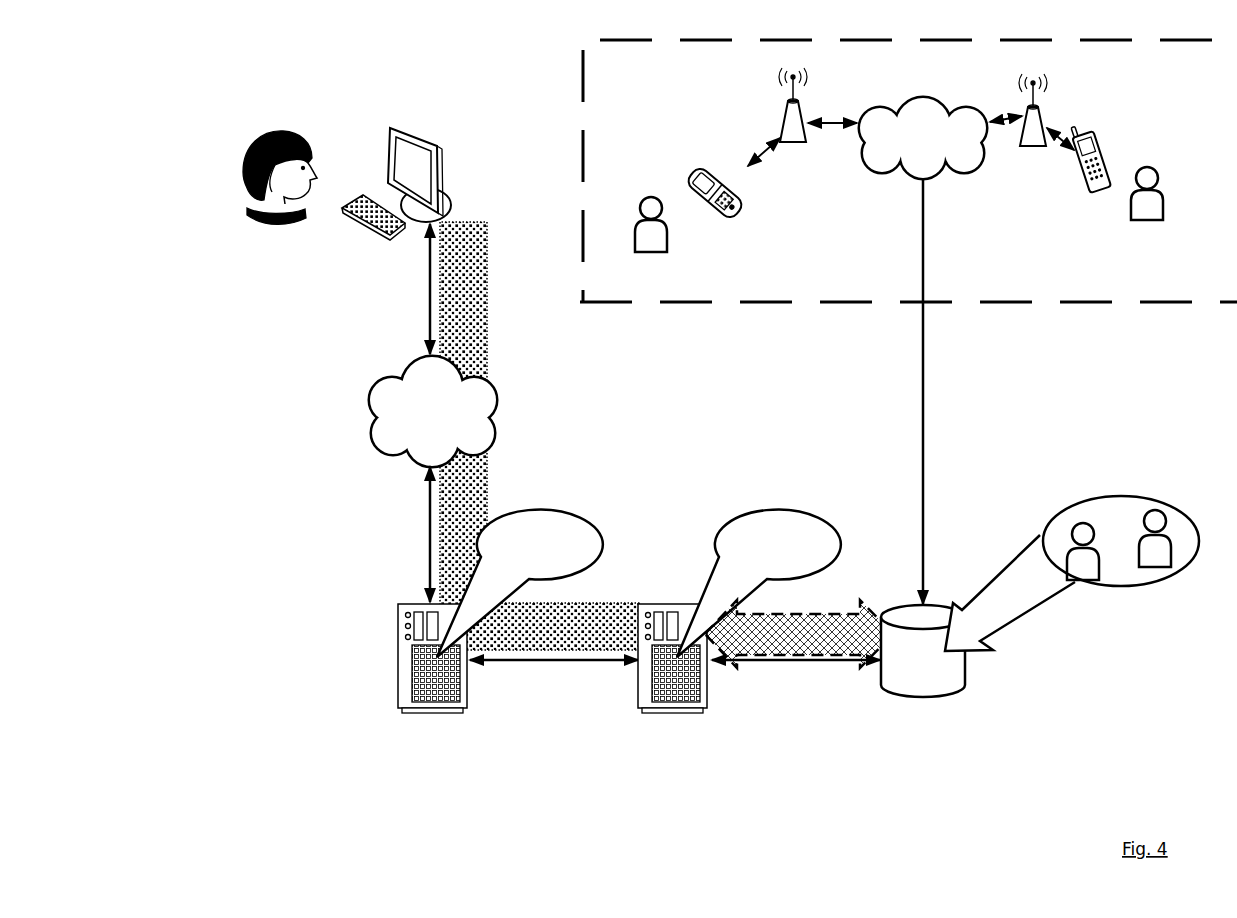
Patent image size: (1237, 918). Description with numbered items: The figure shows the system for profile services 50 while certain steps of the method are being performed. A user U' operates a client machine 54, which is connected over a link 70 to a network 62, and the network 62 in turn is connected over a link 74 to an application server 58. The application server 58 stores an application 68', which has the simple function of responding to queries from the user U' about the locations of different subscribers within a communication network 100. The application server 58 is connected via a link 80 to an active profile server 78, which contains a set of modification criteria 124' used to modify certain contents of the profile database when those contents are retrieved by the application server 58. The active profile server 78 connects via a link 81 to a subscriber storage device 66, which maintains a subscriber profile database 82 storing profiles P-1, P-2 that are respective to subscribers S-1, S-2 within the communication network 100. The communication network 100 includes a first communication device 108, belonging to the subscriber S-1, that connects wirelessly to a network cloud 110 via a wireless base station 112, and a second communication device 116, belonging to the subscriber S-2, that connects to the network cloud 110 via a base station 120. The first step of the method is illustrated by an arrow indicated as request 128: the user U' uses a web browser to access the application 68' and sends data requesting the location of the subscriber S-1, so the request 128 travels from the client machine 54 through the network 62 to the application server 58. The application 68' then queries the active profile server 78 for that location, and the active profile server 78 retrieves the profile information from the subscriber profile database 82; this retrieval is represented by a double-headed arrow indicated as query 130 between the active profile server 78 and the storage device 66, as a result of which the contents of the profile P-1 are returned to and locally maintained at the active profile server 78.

The system for profile services 50 is at (236, 757).
The client machine 54 is at (442, 146).
The application server 58 is at (396, 659).
The network 62 is at (433, 411).
The profile database 66 is at (923, 438).
The application 68' is at (520, 583).
The link 70 is at (430, 262).
The link 74 is at (430, 517).
The active profile server 78 is at (664, 710).
The link 80 is at (562, 663).
The link 81 is at (802, 663).
The subscriber profile database 82 is at (1111, 591).
The communication network 100 is at (1115, 306).
The first communication device 108 is at (740, 206).
The network cloud 110 is at (923, 138).
The wireless base station 112 is at (800, 146).
The second communication device 116 is at (1097, 193).
The base station 120 is at (1027, 147).
The modification criteria 124' is at (759, 583).
The request 128 is at (540, 436).
The query 130 is at (799, 634).
The user U' is at (297, 135).
The subscriber S-1 is at (677, 204).
The subscriber S-2 is at (1160, 175).
The profile P-1 is at (1085, 516).
The profile P-2 is at (1162, 521).